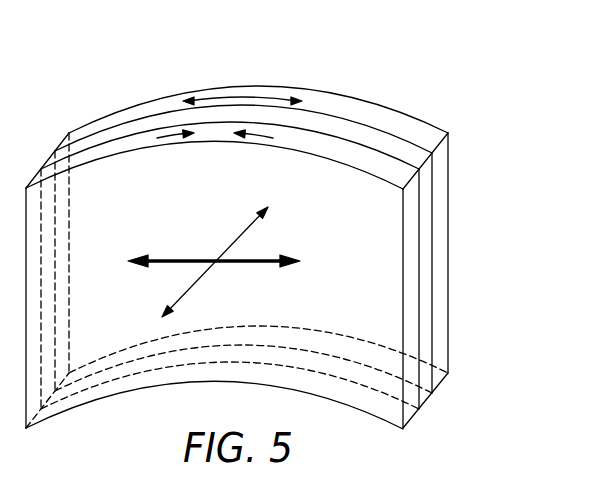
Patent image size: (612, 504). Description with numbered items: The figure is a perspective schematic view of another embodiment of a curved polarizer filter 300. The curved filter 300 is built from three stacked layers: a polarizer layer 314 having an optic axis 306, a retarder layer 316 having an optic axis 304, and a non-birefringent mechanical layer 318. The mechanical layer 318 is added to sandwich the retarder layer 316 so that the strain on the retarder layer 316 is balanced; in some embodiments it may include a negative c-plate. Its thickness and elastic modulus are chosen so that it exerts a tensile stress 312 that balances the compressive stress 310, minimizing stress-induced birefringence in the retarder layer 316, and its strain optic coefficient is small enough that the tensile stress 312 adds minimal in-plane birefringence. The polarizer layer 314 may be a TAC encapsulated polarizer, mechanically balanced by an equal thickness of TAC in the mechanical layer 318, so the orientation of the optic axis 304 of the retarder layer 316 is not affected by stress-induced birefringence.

The curved polarizer filter 300 is at (112, 56).
The optic axis of the retarder layer 304 is at (221, 253).
The optic axis of the polarizer layer 306 is at (258, 259).
The compressive stress 310 is at (214, 138).
The tensile stress 312 is at (243, 97).
The polarizer layer 314 is at (388, 429).
The retarder layer 316 is at (435, 409).
The mechanical layer 318 is at (458, 354).